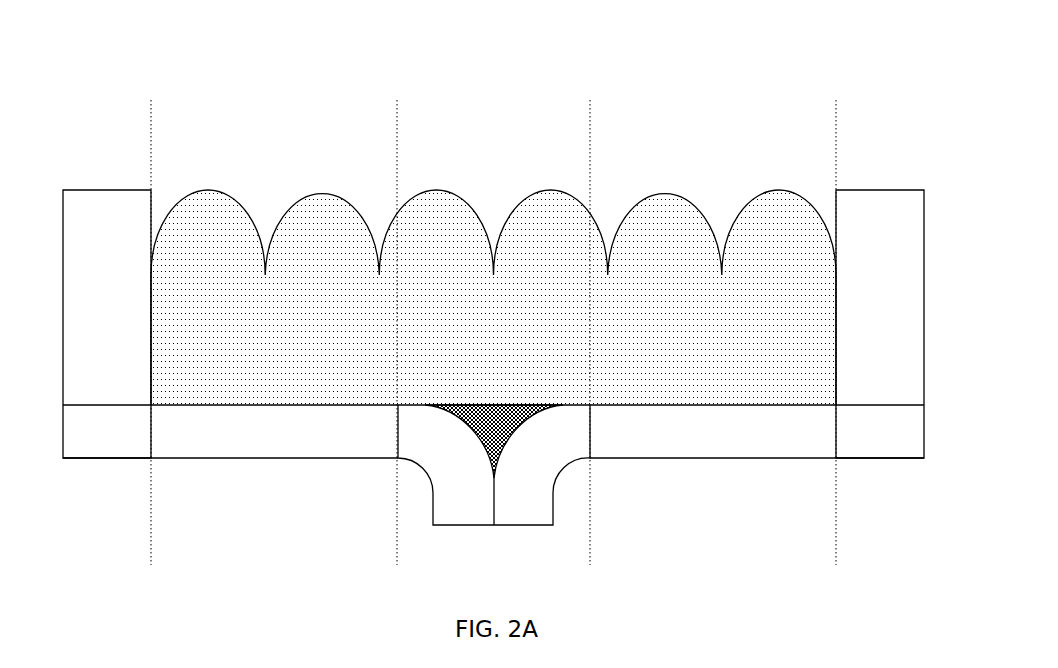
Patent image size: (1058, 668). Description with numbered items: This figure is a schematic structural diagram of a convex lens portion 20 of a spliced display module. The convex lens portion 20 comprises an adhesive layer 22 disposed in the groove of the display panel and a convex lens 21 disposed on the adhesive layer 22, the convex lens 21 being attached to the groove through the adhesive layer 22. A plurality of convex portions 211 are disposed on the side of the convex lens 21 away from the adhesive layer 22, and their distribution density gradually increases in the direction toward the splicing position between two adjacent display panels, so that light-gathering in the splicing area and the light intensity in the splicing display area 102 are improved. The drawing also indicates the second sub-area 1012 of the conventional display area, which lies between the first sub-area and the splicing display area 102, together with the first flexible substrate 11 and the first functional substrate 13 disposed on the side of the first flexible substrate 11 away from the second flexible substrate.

The first flexible substrate 11 is at (240, 433).
The first functional substrate 13 is at (869, 370).
The convex lens portion 20 is at (493, 318).
The convex lens 21 is at (493, 307).
The adhesive layer 22 is at (508, 437).
The convex portion 211 is at (667, 210).
The second sub-area 1012 is at (275, 133).
The splicing display area 102 is at (490, 130).